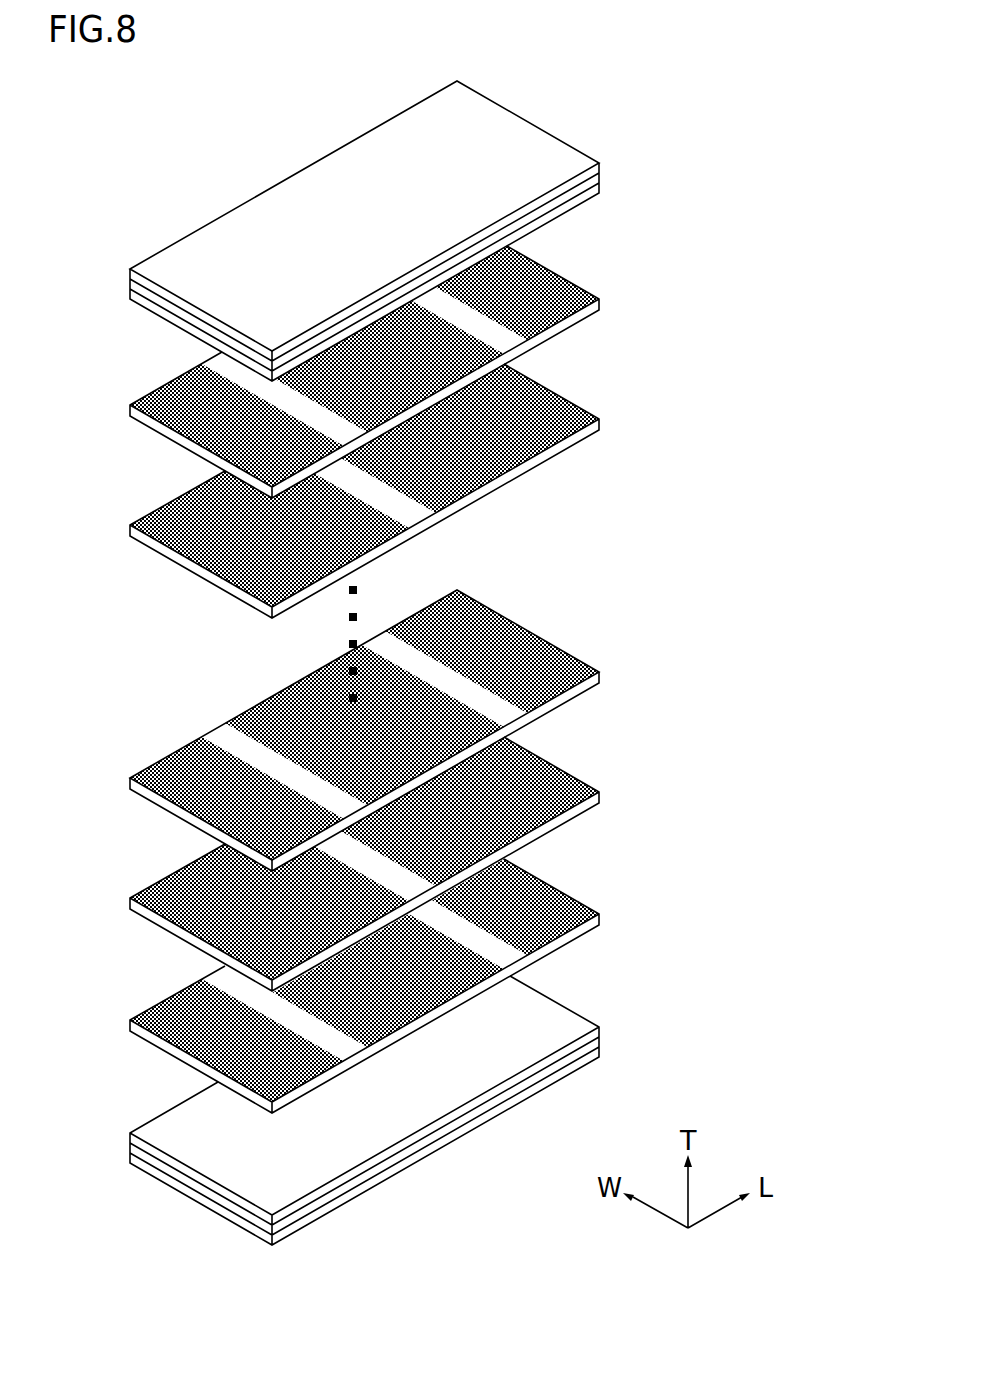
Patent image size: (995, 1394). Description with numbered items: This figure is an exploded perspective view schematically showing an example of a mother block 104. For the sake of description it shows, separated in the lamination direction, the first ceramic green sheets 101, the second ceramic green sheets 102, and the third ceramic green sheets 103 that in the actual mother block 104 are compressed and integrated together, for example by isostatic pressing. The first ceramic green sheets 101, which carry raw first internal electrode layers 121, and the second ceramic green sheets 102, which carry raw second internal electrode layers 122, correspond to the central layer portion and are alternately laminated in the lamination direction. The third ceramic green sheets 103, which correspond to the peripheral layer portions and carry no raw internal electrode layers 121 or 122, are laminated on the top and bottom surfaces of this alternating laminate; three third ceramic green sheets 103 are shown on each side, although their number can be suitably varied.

The mother block 104 is at (168, 118).
The third ceramic green sheet 103 is at (663, 108).
The first ceramic green sheet 101 is at (663, 242).
The second ceramic green sheet 102 is at (663, 362).
The raw first internal electrode layer 121 is at (178, 386).
The raw second internal electrode layer 122 is at (178, 506).